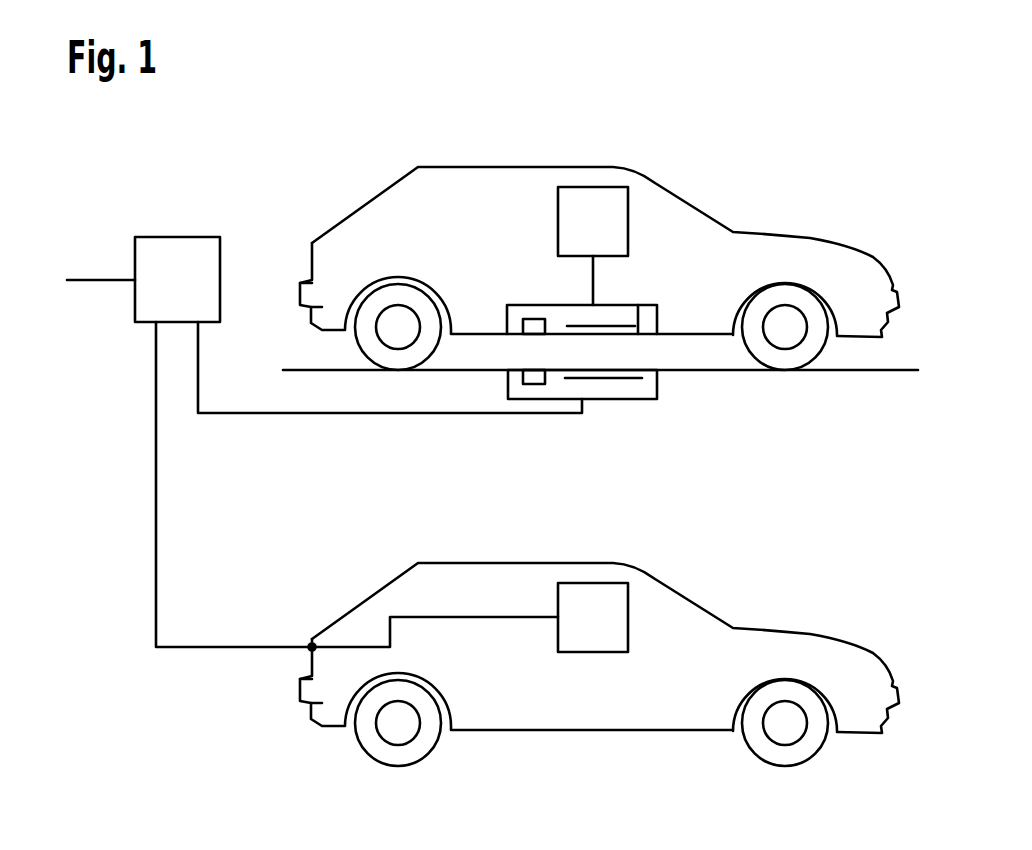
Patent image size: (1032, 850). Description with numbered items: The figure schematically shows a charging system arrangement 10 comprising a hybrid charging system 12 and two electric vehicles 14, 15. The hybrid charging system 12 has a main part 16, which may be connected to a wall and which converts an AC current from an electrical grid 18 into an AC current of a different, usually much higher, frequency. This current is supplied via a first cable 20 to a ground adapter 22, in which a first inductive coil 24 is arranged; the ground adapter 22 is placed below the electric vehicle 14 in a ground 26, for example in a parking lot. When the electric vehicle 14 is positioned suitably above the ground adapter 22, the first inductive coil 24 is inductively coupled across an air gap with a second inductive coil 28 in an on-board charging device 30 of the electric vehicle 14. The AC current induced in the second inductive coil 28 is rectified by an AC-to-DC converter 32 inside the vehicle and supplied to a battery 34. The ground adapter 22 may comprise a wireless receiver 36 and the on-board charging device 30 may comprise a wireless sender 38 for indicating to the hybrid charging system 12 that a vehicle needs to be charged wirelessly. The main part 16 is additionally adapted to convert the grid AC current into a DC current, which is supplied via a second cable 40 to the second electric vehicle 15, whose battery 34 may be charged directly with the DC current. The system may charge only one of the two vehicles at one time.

The charging system arrangement 10 is at (762, 133).
The hybrid charging system 12 is at (155, 165).
The electric vehicle 14 is at (490, 167).
The second electric vehicle 15 is at (490, 563).
The main part 16 is at (221, 252).
The electrical grid 18 is at (93, 280).
The first cable 20 is at (230, 414).
The ground adapter 22 is at (645, 399).
The first inductive coil 24 is at (611, 378).
The ground 26 is at (845, 372).
The second inductive coil 28 is at (628, 326).
The on-board charging device 30 is at (622, 305).
The AC-to-DC converter 32 is at (647, 305).
The battery 34 is at (593, 187).
The wireless receiver 36 is at (507, 378).
The wireless sender 38 is at (507, 325).
The second cable 40 is at (156, 545).